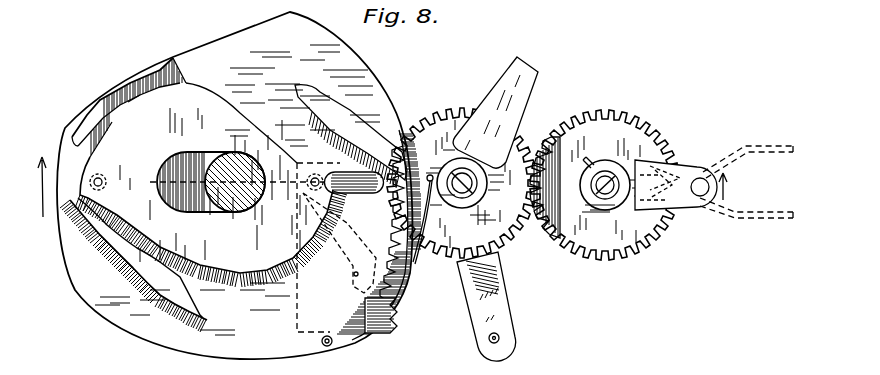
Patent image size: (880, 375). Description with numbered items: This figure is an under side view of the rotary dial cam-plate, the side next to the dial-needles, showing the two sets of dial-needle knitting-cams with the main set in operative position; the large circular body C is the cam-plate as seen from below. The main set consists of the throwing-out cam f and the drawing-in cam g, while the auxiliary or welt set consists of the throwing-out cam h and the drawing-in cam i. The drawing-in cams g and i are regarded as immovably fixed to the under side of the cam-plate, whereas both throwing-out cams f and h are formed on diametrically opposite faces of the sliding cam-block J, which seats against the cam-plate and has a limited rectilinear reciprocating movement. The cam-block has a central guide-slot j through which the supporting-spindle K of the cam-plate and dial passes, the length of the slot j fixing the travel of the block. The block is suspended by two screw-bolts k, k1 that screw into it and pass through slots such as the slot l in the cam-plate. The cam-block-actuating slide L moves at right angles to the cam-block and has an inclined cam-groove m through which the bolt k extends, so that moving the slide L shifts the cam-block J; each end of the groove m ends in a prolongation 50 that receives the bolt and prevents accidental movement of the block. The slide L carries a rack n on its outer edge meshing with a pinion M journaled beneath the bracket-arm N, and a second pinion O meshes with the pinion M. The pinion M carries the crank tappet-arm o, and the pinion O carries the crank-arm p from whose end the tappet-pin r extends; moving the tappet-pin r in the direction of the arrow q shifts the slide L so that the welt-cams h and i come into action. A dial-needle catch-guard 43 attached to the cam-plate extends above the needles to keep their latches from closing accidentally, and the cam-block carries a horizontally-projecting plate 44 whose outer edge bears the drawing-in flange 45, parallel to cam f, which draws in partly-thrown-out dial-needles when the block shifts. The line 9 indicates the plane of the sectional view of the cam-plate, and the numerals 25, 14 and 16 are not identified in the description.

The section line 9 is at (148, 160).
The drawing-in flange 45 is at (120, 86).
The horizontally-projecting plate 44 is at (139, 96).
The throwing-out cam f is at (95, 135).
The screw-bolt k1 is at (100, 184).
The sliding cam-block J is at (211, 185).
The supporting-spindle K is at (237, 163).
The central guide-slot j is at (237, 182).
The disc C is at (234, 185).
The screw-bolt k is at (308, 182).
The drawing-in cam g is at (133, 265).
The drawing-in cam i is at (390, 130).
The slot l is at (350, 194).
The throwing-out cam h is at (293, 249).
The inclined cam-groove m is at (340, 243).
The prolongation 50 is at (354, 275).
The dial-needle catch-guard 43 is at (410, 268).
The rack n is at (398, 310).
The cam-block-actuating slide L is at (366, 303).
The pinion M is at (462, 186).
The bracket-arm N is at (544, 179).
The crank tappet-arm o is at (495, 112).
The arm 25 is at (486, 306).
The pinion O is at (605, 185).
The crank-arm p is at (676, 185).
The tappet-pin r is at (700, 187).
The arrow q is at (728, 186).
The rod 14 is at (758, 148).
The rod 16 is at (760, 220).